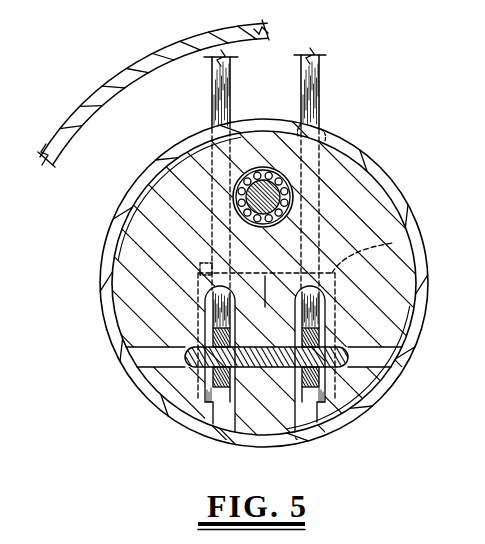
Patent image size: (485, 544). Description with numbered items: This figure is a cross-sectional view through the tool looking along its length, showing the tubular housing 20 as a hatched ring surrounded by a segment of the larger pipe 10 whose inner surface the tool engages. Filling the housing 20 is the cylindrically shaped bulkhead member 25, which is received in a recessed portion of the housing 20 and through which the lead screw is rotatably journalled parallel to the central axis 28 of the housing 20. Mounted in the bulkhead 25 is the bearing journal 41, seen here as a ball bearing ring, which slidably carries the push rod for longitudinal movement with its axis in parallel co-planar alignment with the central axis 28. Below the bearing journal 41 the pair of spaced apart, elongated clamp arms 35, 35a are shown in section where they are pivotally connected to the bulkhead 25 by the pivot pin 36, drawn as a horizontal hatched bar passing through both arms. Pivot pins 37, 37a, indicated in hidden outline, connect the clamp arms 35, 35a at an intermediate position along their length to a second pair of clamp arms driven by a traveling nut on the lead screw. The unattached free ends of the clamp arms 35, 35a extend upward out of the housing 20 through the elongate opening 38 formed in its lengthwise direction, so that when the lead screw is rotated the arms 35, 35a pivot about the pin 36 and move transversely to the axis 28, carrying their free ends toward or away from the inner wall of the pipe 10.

The pipe 10 is at (112, 73).
The tubular housing 20 is at (391, 176).
The bulkhead member 25 is at (369, 216).
The central axis 28 is at (265, 280).
The clamp arm 35 is at (310, 96).
The clamp arm 35a is at (212, 95).
The pivot pin 36 is at (370, 370).
The pivot pin 37 is at (393, 243).
The pivot pin 37a is at (200, 263).
The elongate opening 38 is at (321, 129).
The bearing journal 41 is at (288, 181).